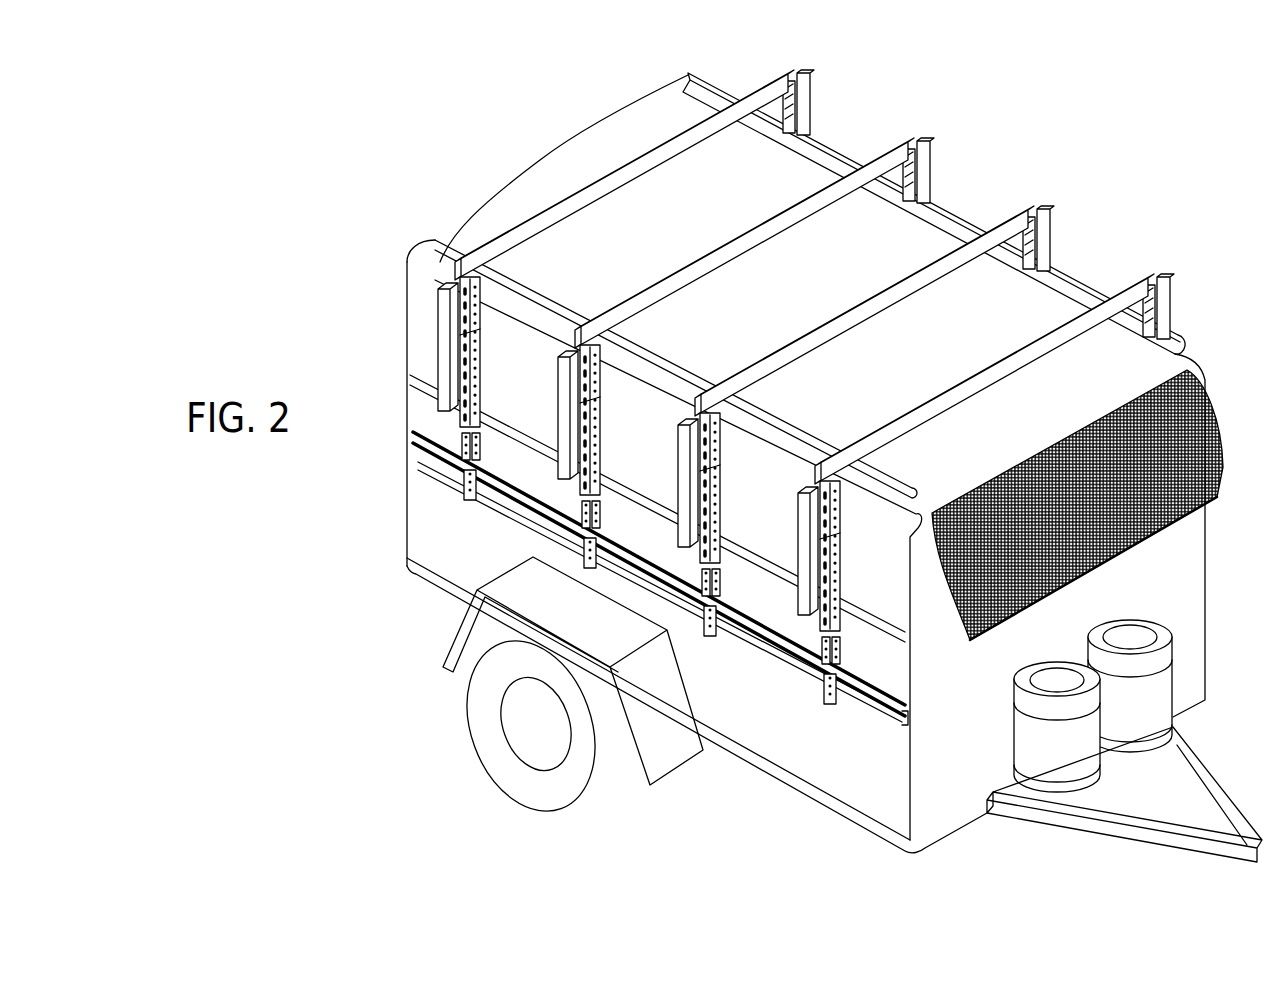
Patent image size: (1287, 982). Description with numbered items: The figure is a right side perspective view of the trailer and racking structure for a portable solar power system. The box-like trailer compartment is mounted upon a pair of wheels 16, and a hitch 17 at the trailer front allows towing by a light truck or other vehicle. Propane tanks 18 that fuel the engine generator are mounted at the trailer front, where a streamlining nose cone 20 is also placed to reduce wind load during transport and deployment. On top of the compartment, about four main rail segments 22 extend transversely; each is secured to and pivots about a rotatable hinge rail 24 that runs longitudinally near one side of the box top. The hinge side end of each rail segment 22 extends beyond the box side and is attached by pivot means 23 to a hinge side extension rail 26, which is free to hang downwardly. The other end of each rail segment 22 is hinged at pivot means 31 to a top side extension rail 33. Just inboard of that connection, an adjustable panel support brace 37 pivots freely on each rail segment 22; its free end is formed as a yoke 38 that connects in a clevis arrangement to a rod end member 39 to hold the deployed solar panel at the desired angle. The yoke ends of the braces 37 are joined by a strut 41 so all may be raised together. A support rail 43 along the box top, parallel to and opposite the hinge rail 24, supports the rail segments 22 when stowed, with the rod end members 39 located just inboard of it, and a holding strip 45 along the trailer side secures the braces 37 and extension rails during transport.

The wheels 16 is at (578, 800).
The hitch 17 is at (1148, 840).
The tanks 18 is at (1053, 775).
The streamlining nose cone 20 is at (1220, 462).
The main rail segments 22 is at (1020, 205).
The pivot means 23 is at (1050, 232).
The rotatable hinge rail 24 is at (838, 152).
The hinge side extension rail 26 is at (805, 103).
The pivot means 31 is at (436, 270).
The top side extension rail 33 is at (438, 372).
The adjustable panel support brace 37 is at (841, 593).
The yoke 38 is at (824, 694).
The rod end member 39 is at (512, 256).
The strut 41 is at (785, 650).
The support rail 43 is at (463, 222).
The holding strip 45 is at (892, 716).